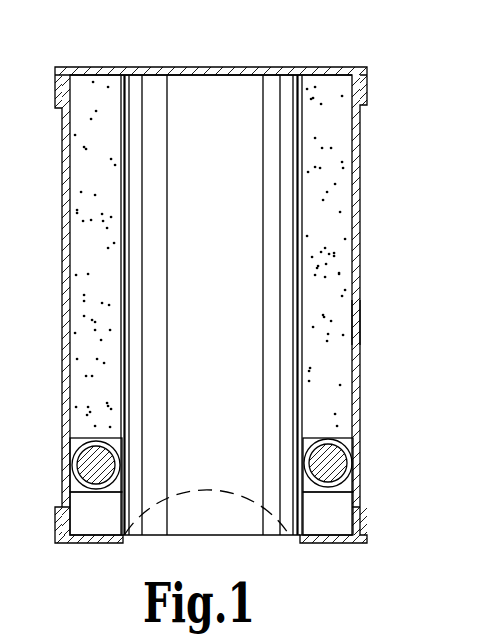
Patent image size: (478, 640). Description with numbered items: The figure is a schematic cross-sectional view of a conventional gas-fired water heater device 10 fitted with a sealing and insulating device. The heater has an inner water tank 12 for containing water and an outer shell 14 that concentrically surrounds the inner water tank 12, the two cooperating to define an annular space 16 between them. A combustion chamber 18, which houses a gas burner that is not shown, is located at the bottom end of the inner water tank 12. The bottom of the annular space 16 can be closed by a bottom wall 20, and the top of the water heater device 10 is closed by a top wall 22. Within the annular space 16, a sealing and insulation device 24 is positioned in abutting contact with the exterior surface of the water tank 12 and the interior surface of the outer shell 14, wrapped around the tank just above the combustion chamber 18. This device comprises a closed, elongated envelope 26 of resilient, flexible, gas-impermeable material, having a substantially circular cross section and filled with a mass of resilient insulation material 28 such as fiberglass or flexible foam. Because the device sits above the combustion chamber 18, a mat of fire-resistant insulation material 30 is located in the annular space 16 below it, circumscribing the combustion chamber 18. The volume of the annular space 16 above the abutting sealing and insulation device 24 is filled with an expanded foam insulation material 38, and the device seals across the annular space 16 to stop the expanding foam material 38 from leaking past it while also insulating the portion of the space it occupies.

The water heater device 10 is at (347, 55).
The inner water tank 12 is at (293, 213).
The outer shell 14 is at (355, 243).
The annular space 16 is at (340, 322).
The combustion chamber 18 is at (266, 538).
The bottom wall 20 is at (335, 543).
The top wall 22 is at (238, 67).
The sealing and insulation device 24 is at (335, 430).
The envelope 26 is at (76, 450).
The insulation material 28 is at (82, 475).
The mat of insulation material 30 is at (92, 525).
The expanded foam insulation material 38 is at (343, 155).